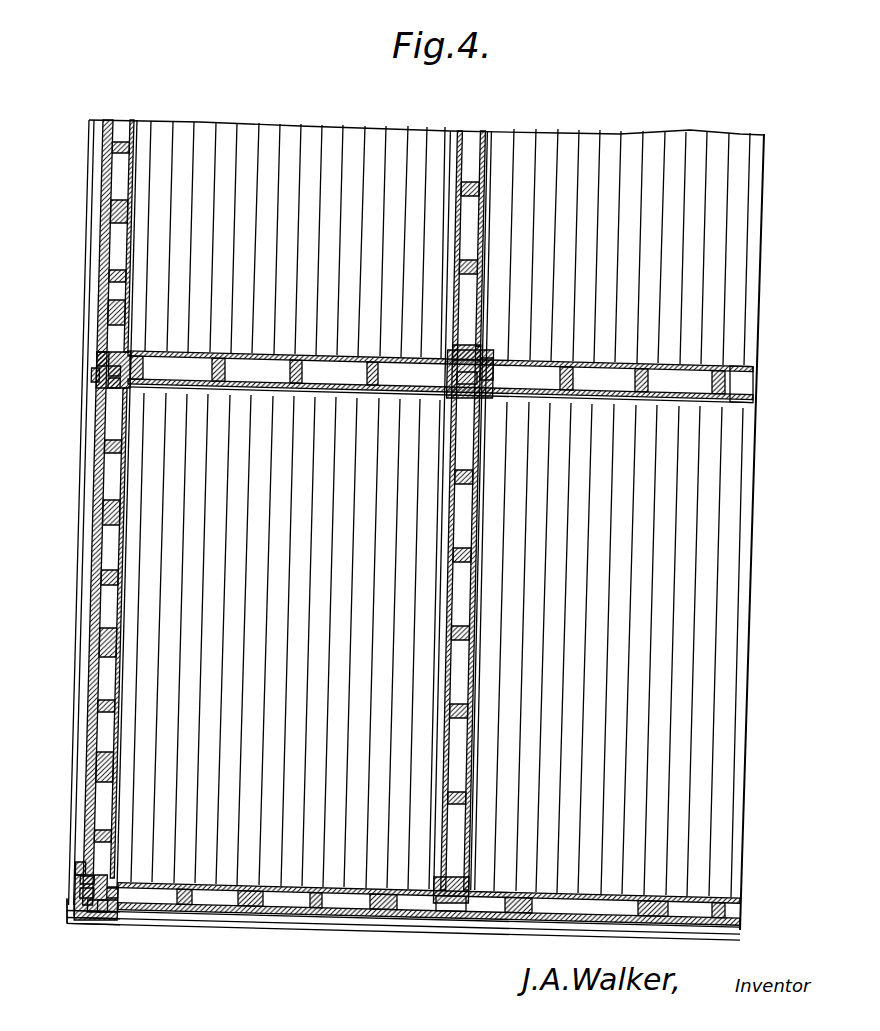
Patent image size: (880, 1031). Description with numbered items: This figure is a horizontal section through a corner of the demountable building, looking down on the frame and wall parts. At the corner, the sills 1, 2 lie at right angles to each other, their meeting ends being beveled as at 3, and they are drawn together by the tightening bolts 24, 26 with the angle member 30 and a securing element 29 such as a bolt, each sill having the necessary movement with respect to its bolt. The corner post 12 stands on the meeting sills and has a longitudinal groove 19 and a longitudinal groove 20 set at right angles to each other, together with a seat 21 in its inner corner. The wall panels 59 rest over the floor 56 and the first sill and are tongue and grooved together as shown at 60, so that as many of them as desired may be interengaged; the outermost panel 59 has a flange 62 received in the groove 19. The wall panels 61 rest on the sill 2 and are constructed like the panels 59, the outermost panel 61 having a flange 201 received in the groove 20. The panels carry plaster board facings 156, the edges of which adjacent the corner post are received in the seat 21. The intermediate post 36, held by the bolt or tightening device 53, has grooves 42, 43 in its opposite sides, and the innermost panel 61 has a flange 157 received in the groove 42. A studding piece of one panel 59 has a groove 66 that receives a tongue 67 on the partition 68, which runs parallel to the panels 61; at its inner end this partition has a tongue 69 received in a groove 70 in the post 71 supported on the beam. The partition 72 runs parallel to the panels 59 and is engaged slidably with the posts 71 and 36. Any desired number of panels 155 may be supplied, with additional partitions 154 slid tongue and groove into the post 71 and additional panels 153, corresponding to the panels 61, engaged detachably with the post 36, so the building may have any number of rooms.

The sill 1 is at (265, 920).
The sill 2 is at (78, 757).
The beveled meeting ends 3 is at (75, 927).
The corner post 12 is at (107, 913).
The longitudinal groove 19 is at (110, 910).
The longitudinal groove 20 is at (93, 883).
The seat 21 is at (115, 882).
The tightening bolt 24 is at (63, 910).
The tightening bolt 26 is at (87, 932).
The securing element 29 is at (73, 861).
The angle member 30 is at (80, 930).
The intermediate post 36 is at (103, 360).
The groove 42 is at (113, 373).
The groove 43 is at (107, 357).
The tightening device 53 is at (95, 375).
The floor 56 is at (705, 677).
The wall panel 59 is at (203, 910).
The tongue and groove joint 60 is at (247, 897).
The wall panel 61 is at (97, 707).
The flange 62 is at (112, 897).
The groove 66 is at (462, 907).
The tongue 67 is at (462, 893).
The partition 68 is at (437, 760).
The tongue 69 is at (467, 382).
The groove 70 is at (473, 382).
The post 71 is at (460, 363).
The partition 72 is at (325, 357).
The additional panels 153 is at (132, 178).
The additional partitions 154 is at (487, 200).
The panels 155 is at (695, 898).
The plaster board facings 156 is at (113, 817).
The flange 157 is at (113, 380).
The flange 201 is at (93, 882).